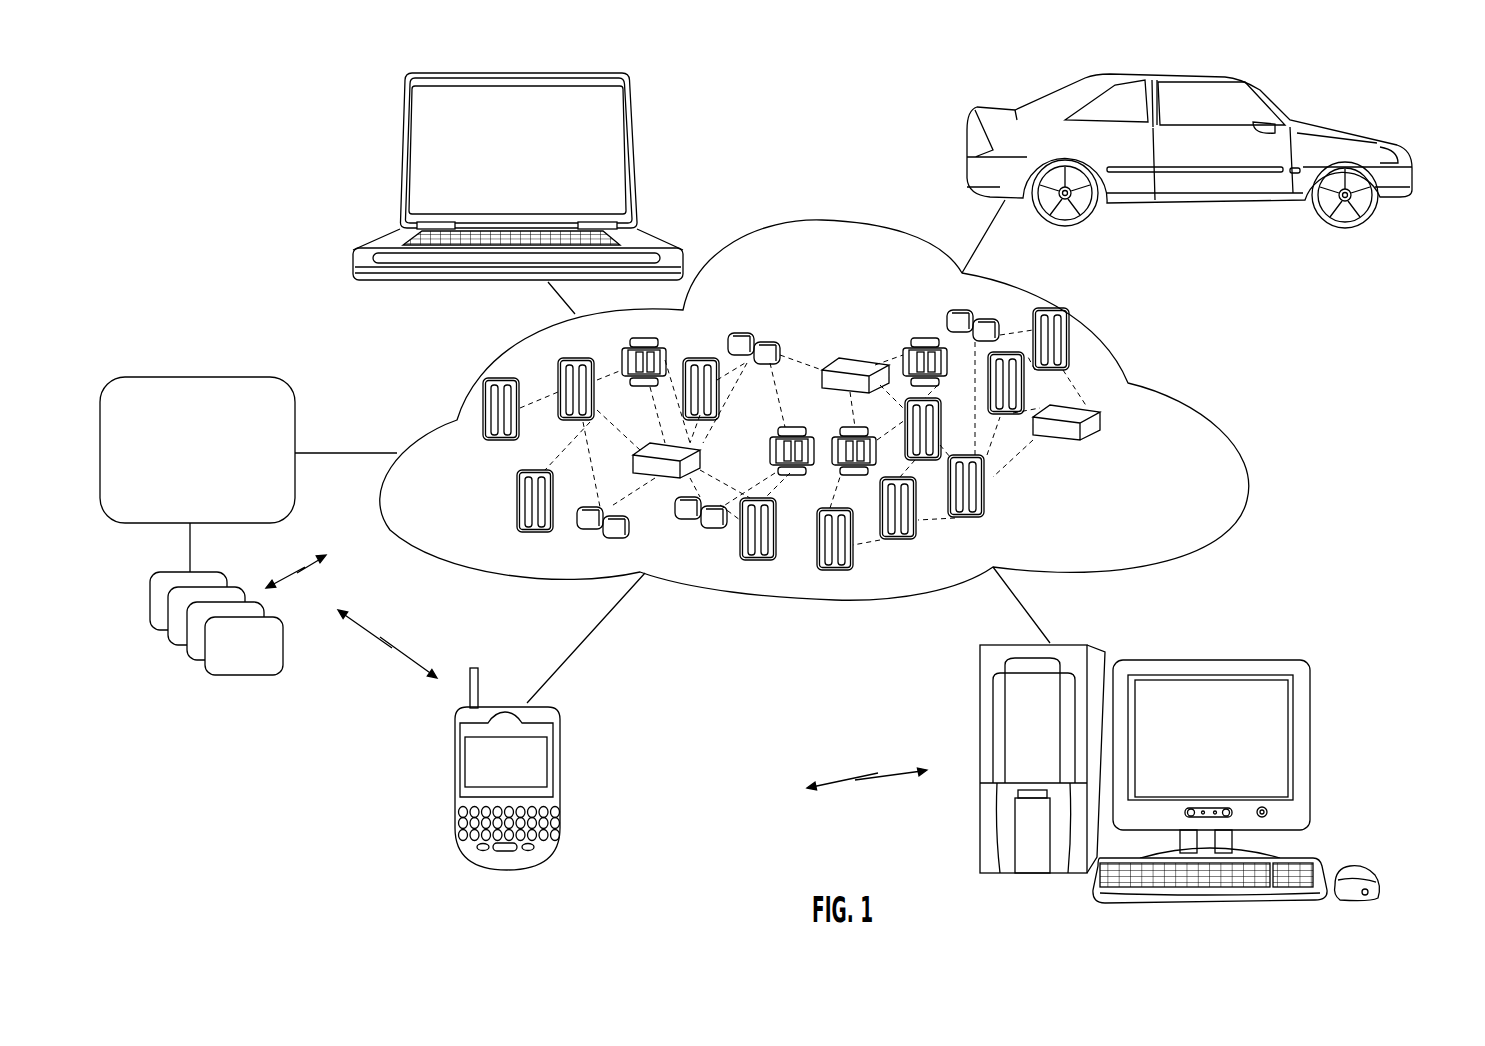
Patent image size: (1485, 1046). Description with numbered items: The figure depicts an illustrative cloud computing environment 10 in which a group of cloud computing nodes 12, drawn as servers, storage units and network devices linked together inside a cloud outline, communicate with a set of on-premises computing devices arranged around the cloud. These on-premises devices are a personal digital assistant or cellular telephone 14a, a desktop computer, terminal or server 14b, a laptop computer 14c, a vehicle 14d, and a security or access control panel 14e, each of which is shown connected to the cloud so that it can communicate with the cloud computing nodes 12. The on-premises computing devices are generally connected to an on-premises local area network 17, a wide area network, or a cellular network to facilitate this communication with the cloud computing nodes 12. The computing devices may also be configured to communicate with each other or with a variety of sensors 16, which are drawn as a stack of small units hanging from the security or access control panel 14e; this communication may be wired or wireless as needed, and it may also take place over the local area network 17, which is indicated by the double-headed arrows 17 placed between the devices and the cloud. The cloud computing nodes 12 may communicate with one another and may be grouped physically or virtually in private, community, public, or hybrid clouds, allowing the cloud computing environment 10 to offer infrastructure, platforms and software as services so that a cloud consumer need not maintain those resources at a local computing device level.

The cloud computing environment 10 is at (1353, 327).
The cloud computing nodes 12 is at (1205, 478).
The personal digital assistant or cellular telephone 14a is at (560, 735).
The desktop computer/terminal/server 14b is at (1307, 692).
The laptop computer 14c is at (631, 118).
The vehicle 14d is at (967, 183).
The security or access control panel 14e is at (296, 416).
The sensors 16 is at (187, 660).
The local area network 17 is at (290, 570).